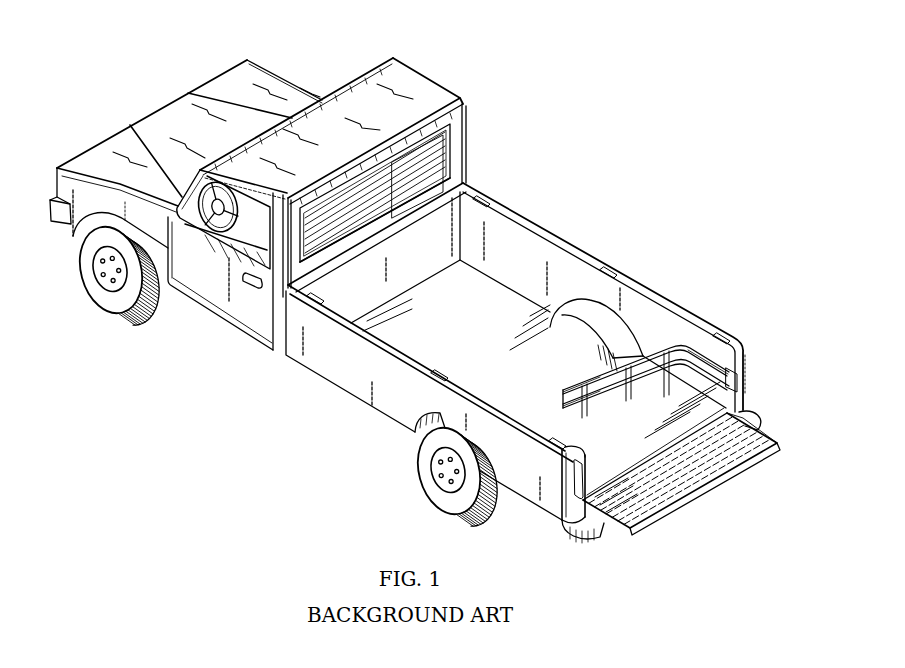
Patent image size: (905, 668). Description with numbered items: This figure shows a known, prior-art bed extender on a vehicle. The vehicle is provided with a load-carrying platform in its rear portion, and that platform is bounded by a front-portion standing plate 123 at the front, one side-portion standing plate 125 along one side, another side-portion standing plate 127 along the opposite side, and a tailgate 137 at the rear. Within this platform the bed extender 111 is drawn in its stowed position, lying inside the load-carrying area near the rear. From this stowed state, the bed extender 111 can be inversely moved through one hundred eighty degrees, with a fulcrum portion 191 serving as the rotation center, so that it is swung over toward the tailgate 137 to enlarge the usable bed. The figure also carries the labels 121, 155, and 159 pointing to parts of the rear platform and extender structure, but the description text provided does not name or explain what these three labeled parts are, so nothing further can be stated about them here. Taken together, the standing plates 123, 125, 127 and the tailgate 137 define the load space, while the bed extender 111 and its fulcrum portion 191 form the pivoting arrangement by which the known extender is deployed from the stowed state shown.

The bed extender 111 is at (684, 341).
The rear sill / tailgate hinge 121 is at (655, 456).
The front-portion standing plate 123 is at (423, 248).
The side-portion standing plate 125 is at (514, 251).
The side-portion standing plate 127 is at (405, 350).
The tailgate 137 is at (765, 437).
The upper rail 155 is at (697, 345).
The support bar 159 is at (566, 392).
The fulcrum portion 191 is at (723, 384).